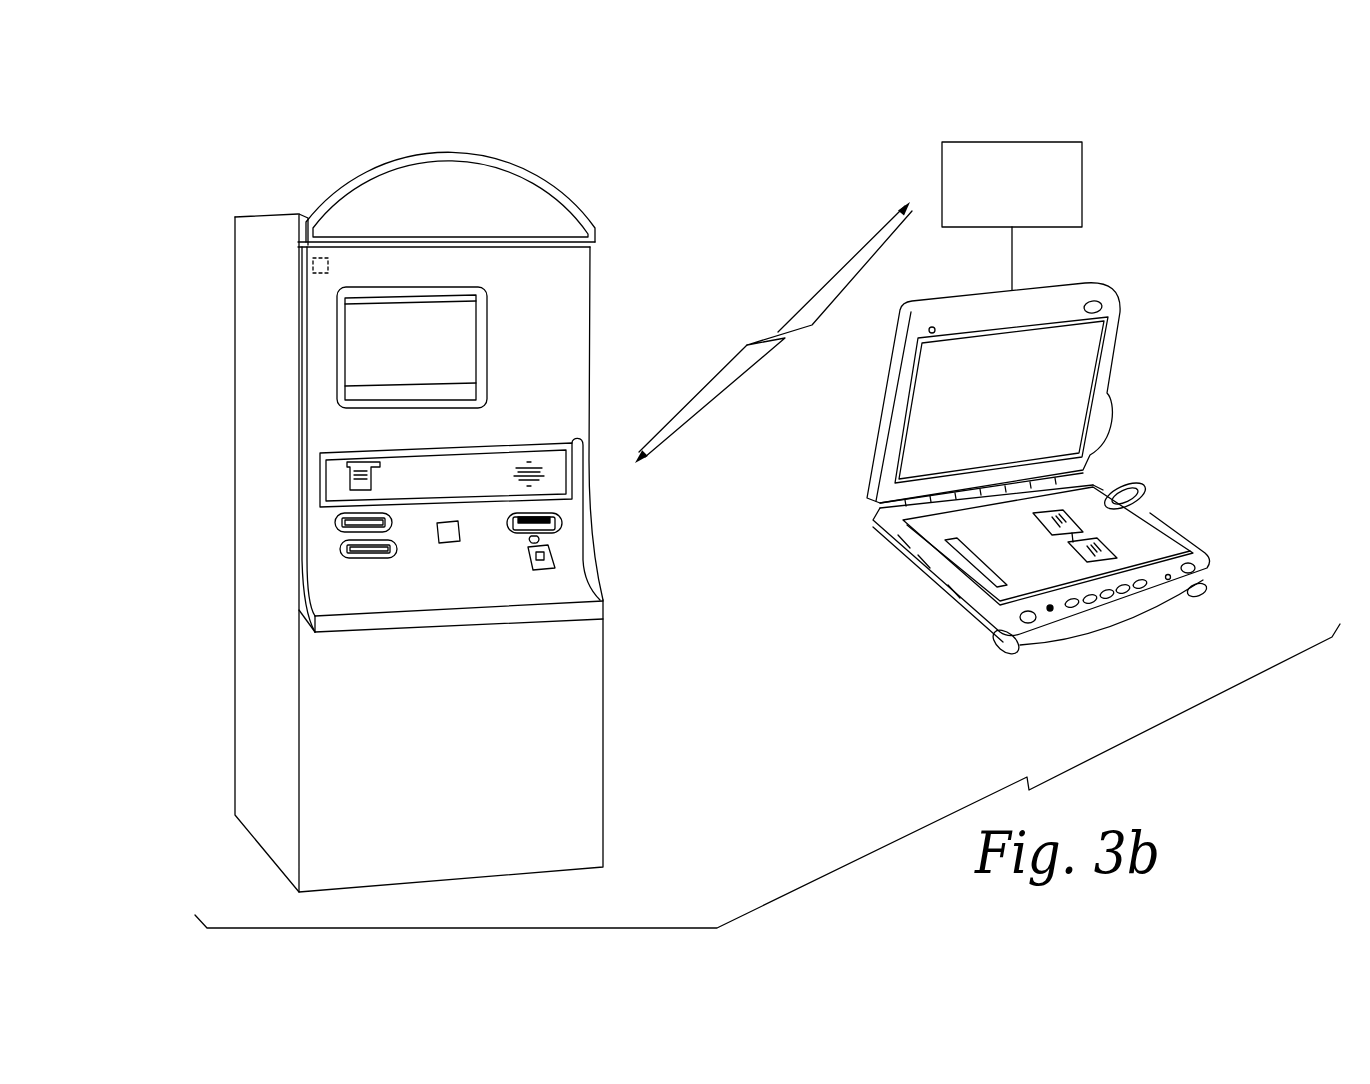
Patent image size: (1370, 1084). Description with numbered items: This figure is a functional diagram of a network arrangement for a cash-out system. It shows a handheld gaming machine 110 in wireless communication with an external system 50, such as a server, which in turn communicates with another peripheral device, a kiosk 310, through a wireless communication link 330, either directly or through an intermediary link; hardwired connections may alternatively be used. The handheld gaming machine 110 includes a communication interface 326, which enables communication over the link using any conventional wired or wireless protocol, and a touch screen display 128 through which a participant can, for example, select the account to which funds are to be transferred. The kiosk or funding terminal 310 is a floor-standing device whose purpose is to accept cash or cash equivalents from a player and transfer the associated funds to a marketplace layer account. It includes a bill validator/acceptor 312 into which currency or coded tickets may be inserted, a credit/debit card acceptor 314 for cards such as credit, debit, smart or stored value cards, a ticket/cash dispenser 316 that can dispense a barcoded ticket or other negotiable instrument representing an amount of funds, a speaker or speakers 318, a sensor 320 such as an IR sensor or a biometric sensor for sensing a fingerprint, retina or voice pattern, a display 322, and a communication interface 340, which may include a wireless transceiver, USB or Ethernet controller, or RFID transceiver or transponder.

The kiosk 310 is at (237, 165).
The communication interface 340 is at (322, 255).
The display 322 is at (340, 337).
The speaker 318 is at (537, 462).
The bill validator/acceptor 312 is at (335, 521).
The credit/debit card acceptor 314 is at (340, 548).
The sensor 320 is at (453, 542).
The ticket/cash dispenser 316 is at (565, 544).
The wireless communication link 330 is at (783, 312).
The external system 50 is at (1083, 157).
The handheld gaming machine 110 is at (1060, 471).
The touch screen display 128 is at (1143, 542).
The communication interface 326 is at (955, 540).